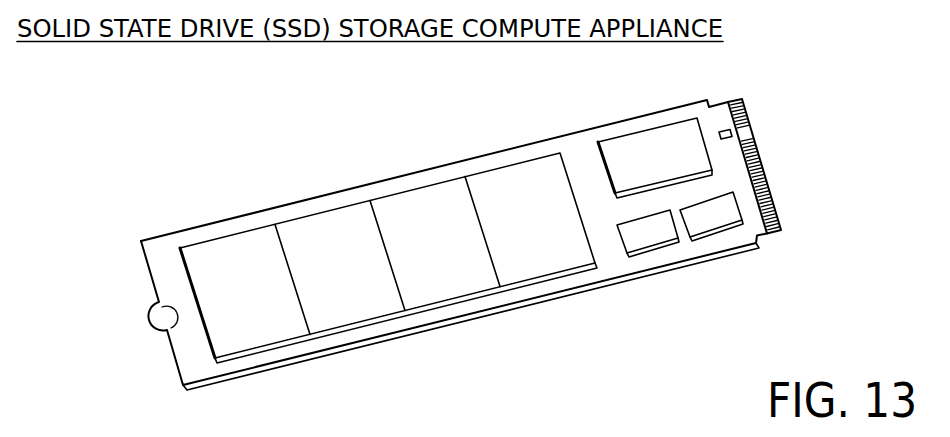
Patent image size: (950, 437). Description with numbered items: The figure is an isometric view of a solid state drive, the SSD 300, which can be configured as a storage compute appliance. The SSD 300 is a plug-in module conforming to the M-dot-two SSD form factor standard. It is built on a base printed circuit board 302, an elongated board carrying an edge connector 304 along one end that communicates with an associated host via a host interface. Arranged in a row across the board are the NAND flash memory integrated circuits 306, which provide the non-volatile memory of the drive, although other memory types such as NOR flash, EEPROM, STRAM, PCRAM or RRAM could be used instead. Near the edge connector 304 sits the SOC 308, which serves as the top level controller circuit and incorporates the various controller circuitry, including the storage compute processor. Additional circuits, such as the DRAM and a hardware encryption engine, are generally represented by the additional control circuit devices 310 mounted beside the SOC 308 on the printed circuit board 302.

The SSD 300 is at (221, 143).
The base printed circuit board 302 is at (613, 262).
The edge connector 304 is at (790, 177).
The NAND flash memory integrated circuits 306 is at (423, 208).
The SOC 308 is at (650, 143).
The additional control circuit devices 310 is at (697, 262).